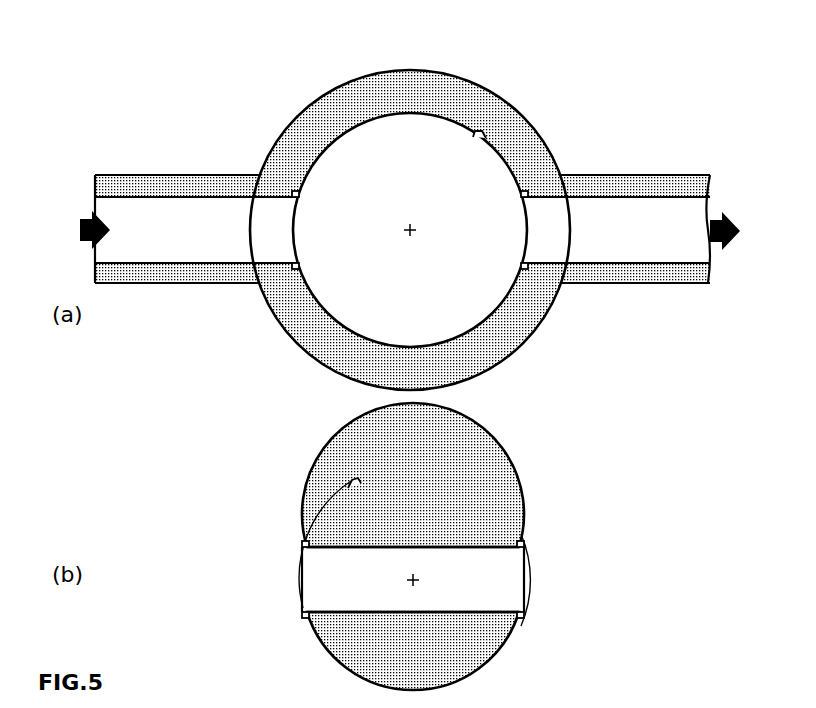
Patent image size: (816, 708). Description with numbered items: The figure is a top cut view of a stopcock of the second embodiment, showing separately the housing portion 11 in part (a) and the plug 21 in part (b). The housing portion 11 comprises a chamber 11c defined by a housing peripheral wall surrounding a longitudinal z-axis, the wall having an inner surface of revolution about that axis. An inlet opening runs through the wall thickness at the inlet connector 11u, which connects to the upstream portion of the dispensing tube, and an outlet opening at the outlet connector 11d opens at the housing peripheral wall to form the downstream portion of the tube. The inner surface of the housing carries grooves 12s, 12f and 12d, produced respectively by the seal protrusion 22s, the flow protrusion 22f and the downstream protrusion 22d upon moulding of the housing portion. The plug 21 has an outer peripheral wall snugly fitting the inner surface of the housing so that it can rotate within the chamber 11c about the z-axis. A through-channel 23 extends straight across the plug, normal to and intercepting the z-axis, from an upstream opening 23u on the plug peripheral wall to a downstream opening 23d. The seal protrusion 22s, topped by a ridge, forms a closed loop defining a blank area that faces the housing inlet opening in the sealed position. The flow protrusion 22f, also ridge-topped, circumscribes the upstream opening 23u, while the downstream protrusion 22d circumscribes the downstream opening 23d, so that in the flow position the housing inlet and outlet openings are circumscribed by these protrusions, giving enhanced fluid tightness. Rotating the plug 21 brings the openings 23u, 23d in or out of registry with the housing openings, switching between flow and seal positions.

The housing portion 11 is at (410, 202).
The inlet connector 11u is at (201, 175).
The outlet connector 11d is at (662, 175).
The chamber 11c is at (424, 158).
The groove 12s is at (478, 130).
The groove 12d is at (293, 275).
The groove 12f is at (523, 278).
The plug 21 is at (415, 546).
The seal protrusion 22s is at (315, 515).
The downstream protrusion 22d is at (530, 553).
The flow protrusion 22f is at (299, 605).
The through-channel 23 is at (415, 597).
The upstream opening 23u is at (315, 583).
The downstream opening 23d is at (530, 562).